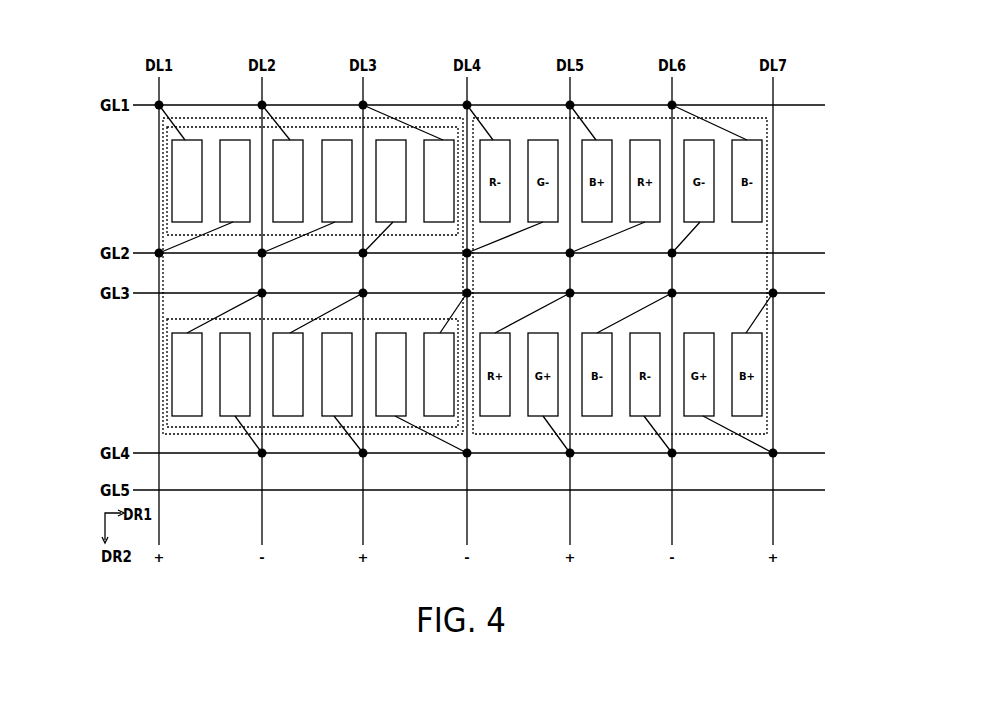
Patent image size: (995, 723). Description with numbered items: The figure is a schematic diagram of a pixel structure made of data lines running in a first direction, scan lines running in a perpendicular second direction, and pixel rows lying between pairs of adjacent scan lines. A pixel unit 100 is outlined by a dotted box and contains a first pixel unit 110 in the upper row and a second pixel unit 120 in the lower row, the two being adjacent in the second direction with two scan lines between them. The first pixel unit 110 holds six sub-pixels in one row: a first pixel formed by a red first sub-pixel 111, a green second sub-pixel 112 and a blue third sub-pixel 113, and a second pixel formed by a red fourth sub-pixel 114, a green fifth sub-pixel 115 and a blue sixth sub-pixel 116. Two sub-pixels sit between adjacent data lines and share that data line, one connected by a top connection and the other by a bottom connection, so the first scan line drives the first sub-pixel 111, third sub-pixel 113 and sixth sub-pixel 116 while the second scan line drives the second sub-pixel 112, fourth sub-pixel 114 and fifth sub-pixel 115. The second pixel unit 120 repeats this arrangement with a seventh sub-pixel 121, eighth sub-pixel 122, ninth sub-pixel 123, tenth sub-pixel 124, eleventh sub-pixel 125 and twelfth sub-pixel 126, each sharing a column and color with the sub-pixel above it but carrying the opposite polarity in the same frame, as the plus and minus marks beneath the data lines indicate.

The pixel unit 100 is at (349, 118).
The first pixel unit 110 is at (348, 236).
The second pixel unit 120 is at (435, 320).
The first sub-pixel 111 is at (190, 139).
The second sub-pixel 112 is at (233, 139).
The third sub-pixel 113 is at (288, 139).
The fourth sub-pixel 114 is at (340, 139).
The fifth sub-pixel 115 is at (397, 139).
The sixth sub-pixel 116 is at (445, 139).
The seventh sub-pixel 121 is at (185, 417).
The eighth sub-pixel 122 is at (235, 417).
The ninth sub-pixel 123 is at (290, 417).
The tenth sub-pixel 124 is at (335, 417).
The eleventh sub-pixel 125 is at (395, 417).
The twelfth sub-pixel 126 is at (443, 417).